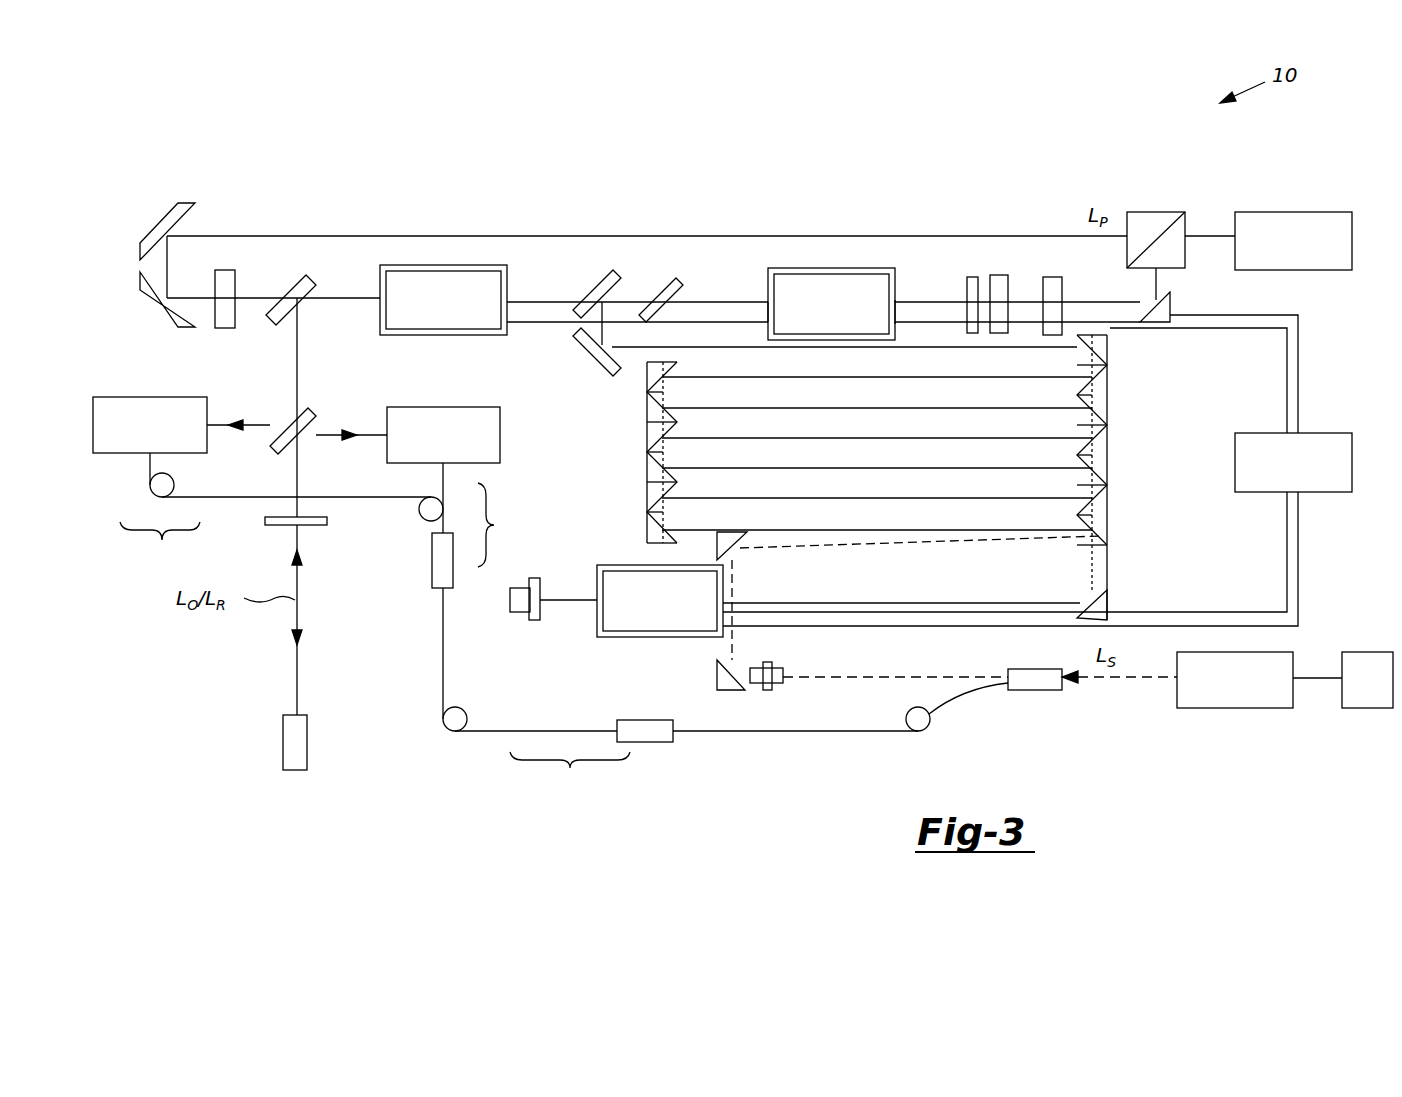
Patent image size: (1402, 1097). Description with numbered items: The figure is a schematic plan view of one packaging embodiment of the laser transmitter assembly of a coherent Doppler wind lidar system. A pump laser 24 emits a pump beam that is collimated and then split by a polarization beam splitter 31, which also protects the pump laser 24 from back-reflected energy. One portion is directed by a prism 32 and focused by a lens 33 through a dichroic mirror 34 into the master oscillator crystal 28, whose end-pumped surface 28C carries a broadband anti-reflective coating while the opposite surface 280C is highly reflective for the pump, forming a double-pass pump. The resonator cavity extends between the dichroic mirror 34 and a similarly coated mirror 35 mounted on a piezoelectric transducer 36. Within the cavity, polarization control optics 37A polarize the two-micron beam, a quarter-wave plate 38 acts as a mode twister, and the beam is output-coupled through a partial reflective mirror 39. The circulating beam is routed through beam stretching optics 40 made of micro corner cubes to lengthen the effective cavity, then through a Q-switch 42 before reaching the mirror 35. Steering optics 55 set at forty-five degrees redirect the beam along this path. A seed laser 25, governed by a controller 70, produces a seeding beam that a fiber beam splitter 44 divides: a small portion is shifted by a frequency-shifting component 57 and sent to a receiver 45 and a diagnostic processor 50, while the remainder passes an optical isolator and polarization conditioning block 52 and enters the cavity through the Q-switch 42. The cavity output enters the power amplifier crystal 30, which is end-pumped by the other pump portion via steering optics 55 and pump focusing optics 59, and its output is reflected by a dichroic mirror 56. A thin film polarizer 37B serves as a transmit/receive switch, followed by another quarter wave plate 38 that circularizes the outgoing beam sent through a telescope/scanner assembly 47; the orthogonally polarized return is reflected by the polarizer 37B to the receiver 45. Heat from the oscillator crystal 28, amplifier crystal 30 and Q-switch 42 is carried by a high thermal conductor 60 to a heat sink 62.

The pump laser 24 is at (1292, 212).
The seed laser 25 is at (1233, 708).
The master oscillator crystal 28 is at (833, 268).
The end-pumped surface 28C is at (895, 300).
The opposite surface 280C is at (768, 300).
The power amplifier crystal 30 is at (440, 265).
The polarization beam splitter 31 is at (1156, 212).
The prism 32 is at (1172, 304).
The lens 33 is at (1052, 277).
The dichroic mirror 34 is at (998, 275).
The mirror 35 is at (540, 612).
The piezoelectric transducer 36 is at (518, 612).
The polarization control optics 37A is at (678, 272).
The thin film polarizer 37B is at (300, 440).
The quarter-wave plate 38 is at (972, 277).
The partial reflective mirror 39 is at (586, 283).
The beam stretching optics 40 is at (647, 430).
The Q-switch 42 is at (614, 565).
The fiber beam splitter 44 is at (1012, 706).
The receiver 45 is at (440, 407).
The telescope/scanner assembly 47 is at (283, 742).
The diagnostic processor 50 is at (150, 397).
The polarization conditioning block 52 is at (772, 664).
The steering optics 55 is at (152, 228).
The dichroic mirror 56 is at (312, 280).
The frequency-shifting component 57 is at (608, 761).
The pump focusing optics 59 is at (228, 270).
The high thermal conductor 60 is at (1298, 380).
The heat sink 62 is at (1235, 463).
The controller 70 is at (1367, 708).